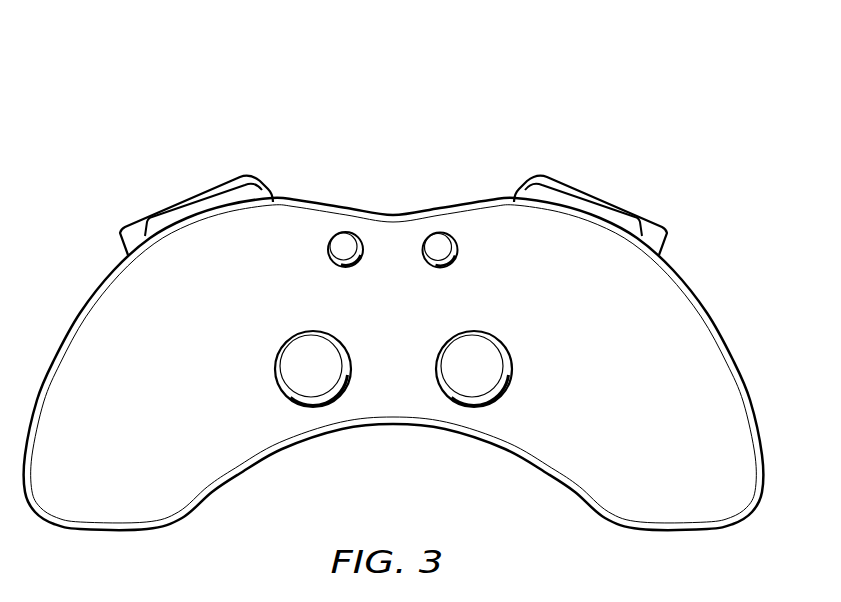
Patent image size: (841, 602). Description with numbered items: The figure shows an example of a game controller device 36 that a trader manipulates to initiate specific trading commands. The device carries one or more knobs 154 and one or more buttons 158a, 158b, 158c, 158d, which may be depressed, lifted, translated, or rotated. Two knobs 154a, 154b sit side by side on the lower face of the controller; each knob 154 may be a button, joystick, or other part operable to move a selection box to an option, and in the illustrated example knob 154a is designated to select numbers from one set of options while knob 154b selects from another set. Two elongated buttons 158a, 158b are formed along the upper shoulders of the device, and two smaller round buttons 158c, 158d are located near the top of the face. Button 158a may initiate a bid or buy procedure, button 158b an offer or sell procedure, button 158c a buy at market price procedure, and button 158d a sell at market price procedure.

The game controller device 36 is at (459, 156).
The knobs 154 is at (274, 321).
The knob 154a is at (275, 370).
The knob 154b is at (512, 368).
The button 158a is at (212, 182).
The button 158b is at (573, 180).
The button 158c is at (328, 250).
The button 158d is at (458, 252).